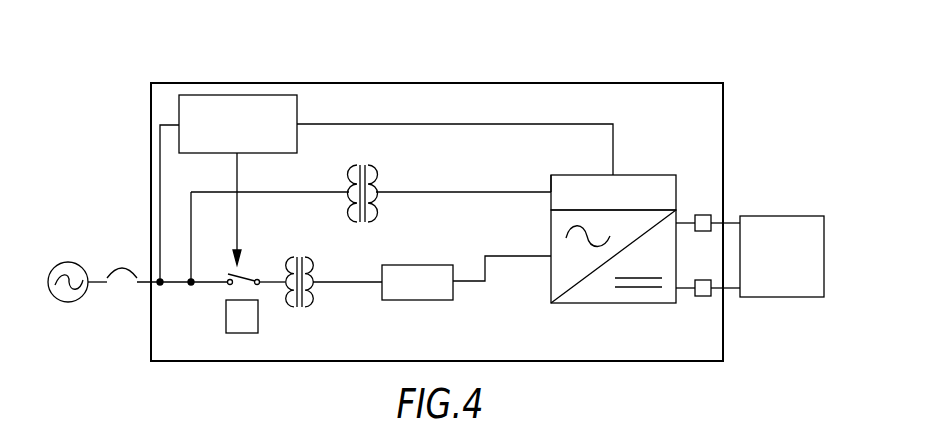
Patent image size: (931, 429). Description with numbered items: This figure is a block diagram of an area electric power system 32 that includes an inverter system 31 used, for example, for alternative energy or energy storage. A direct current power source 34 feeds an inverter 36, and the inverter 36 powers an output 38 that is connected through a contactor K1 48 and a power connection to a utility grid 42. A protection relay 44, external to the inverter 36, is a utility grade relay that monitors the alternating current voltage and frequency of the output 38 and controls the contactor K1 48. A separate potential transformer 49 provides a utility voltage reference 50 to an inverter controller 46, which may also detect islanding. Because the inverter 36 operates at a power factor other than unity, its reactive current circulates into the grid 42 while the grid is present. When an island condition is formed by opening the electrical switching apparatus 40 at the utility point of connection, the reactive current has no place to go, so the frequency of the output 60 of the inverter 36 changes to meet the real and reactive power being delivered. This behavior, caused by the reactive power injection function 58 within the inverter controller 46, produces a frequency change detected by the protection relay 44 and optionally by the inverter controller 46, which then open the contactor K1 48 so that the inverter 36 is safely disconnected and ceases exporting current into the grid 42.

The inverter system 31 is at (698, 83).
The area electric power system 32 is at (453, 74).
The direct current power source 34 is at (792, 215).
The inverter 36 is at (605, 304).
The output 38 is at (150, 285).
The electrical switching apparatus 40 is at (122, 269).
The utility grid 42 is at (73, 262).
The protection relay 44 is at (217, 94).
The inverter controller 46 is at (652, 175).
The contactor K1 48 is at (225, 327).
The potential transformer 49 is at (373, 167).
The utility voltage reference 50 is at (478, 193).
The reactive power injection function 58 is at (553, 177).
The output of the inverter 60 is at (551, 252).